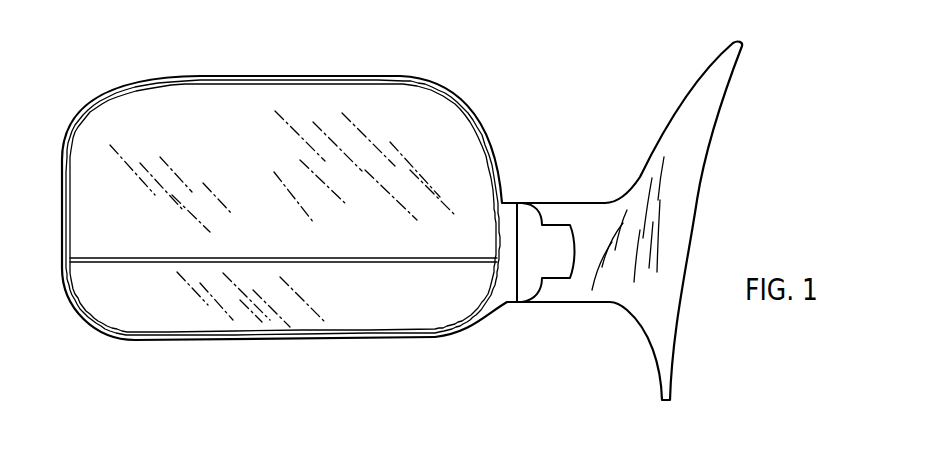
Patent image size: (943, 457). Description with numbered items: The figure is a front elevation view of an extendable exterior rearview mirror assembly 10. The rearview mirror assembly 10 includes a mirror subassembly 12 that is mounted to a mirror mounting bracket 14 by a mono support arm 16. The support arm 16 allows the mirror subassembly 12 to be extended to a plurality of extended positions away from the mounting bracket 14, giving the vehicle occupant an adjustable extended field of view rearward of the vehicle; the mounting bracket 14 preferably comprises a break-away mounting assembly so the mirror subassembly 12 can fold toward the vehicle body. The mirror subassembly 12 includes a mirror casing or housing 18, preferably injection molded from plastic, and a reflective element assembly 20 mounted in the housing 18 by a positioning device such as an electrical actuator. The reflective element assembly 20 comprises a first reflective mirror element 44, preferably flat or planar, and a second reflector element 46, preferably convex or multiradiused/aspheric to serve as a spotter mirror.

The exterior rearview mirror assembly 10 is at (70, 98).
The mirror subassembly 12 is at (474, 73).
The mirror mounting bracket 14 is at (669, 82).
The mono support arm 16 is at (566, 182).
The mirror housing 18 is at (163, 88).
The reflective element assembly 20 is at (480, 147).
The first reflective mirror element 44 is at (402, 102).
The second reflector element 46 is at (405, 317).